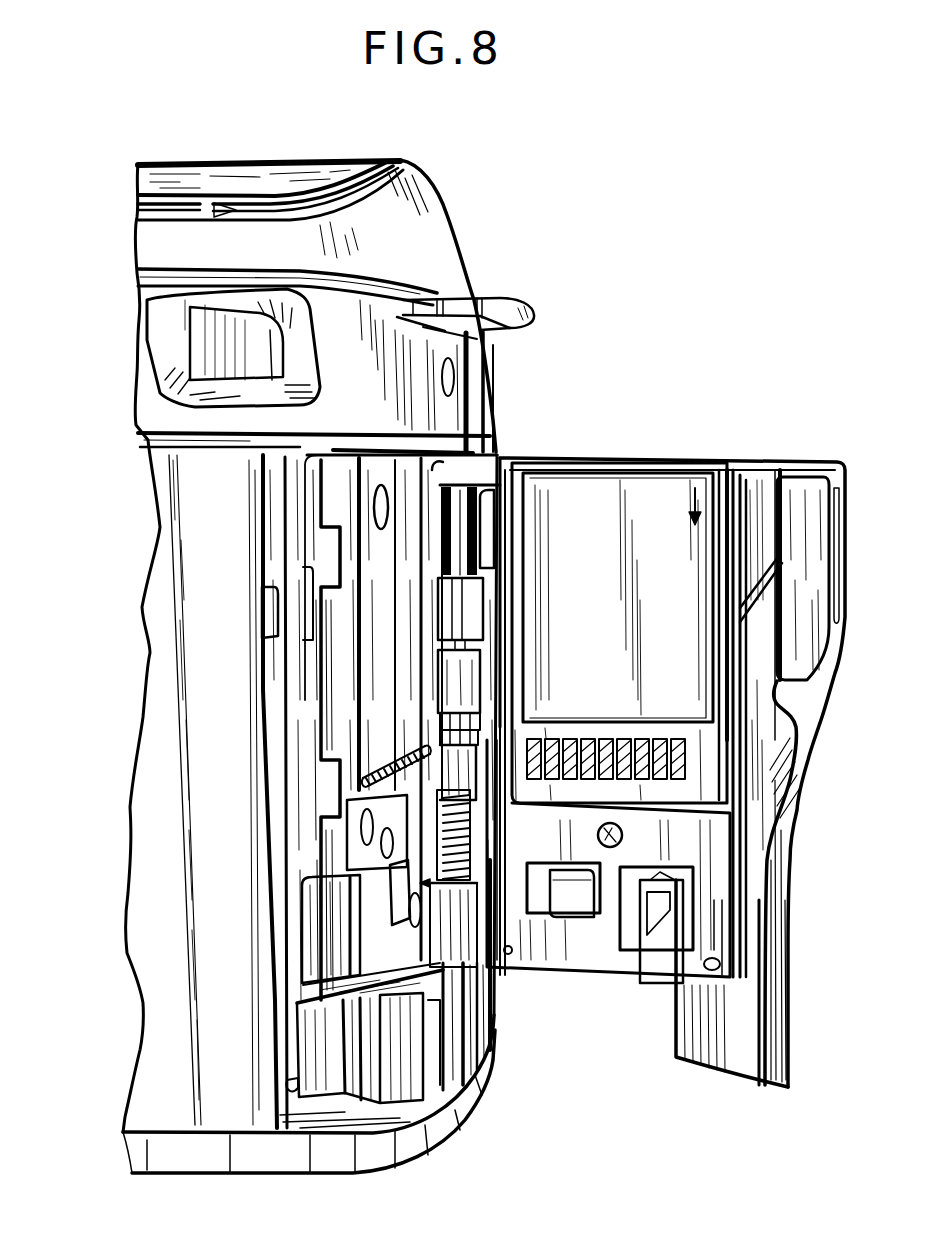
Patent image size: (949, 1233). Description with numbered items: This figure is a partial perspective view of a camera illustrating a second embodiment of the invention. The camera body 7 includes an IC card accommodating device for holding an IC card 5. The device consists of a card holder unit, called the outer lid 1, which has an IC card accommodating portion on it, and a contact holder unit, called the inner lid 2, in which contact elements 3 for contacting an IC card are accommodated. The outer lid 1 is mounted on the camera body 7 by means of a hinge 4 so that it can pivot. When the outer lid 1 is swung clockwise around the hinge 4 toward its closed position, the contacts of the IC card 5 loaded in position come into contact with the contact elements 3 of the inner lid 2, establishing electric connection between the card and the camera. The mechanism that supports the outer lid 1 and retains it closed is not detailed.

The outer lid 1 is at (768, 468).
The inner lid 2 is at (337, 488).
The contact elements 3 is at (395, 752).
The hinge 4 is at (463, 645).
The IC card 5 is at (717, 467).
The camera body 7 is at (453, 250).